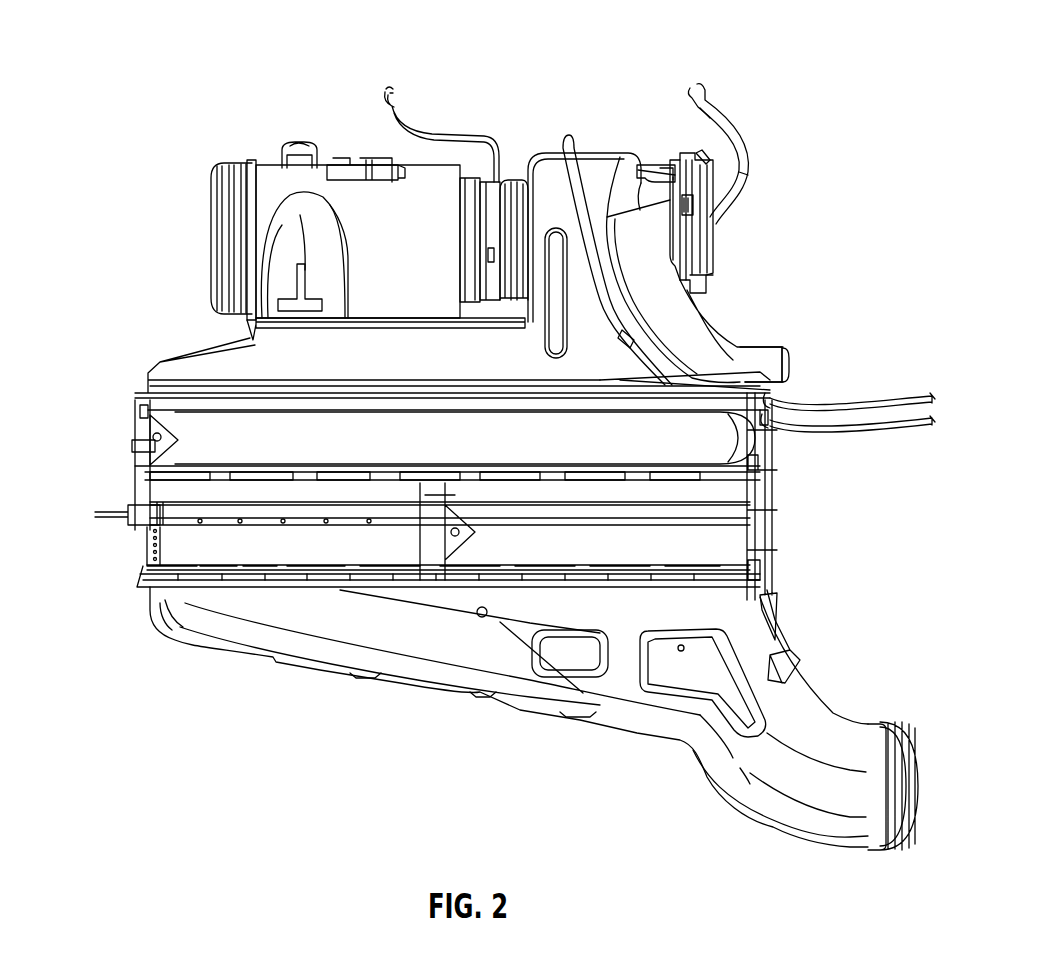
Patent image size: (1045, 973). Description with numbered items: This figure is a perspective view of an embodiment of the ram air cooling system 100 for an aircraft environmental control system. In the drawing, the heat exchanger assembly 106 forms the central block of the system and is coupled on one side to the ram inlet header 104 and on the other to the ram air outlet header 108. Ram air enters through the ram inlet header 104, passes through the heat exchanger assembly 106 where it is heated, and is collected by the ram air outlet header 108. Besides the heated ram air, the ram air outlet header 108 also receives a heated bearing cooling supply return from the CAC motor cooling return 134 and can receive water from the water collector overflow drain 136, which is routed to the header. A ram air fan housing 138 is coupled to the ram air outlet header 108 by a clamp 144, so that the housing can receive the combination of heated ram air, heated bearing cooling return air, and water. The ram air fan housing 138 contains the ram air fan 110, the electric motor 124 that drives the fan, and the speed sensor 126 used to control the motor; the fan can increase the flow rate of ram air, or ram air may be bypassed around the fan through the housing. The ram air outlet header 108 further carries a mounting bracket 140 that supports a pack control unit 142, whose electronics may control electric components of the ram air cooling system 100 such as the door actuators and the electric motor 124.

The ram air cooling system 100 is at (168, 32).
The ram inlet header 104 is at (410, 670).
The heat exchanger assembly 106 is at (103, 464).
The ram air outlet header 108 is at (593, 152).
The ram air fan 110 is at (352, 188).
The electric motor 124 is at (463, 228).
The speed sensor 126 is at (487, 220).
The CAC motor cooling return 134 is at (788, 363).
The water collector overflow drain 136 is at (563, 140).
The ram air fan housing 138 is at (270, 165).
The mounting bracket 140 is at (670, 167).
The pack control unit 142 is at (707, 227).
The clamp 144 is at (507, 175).